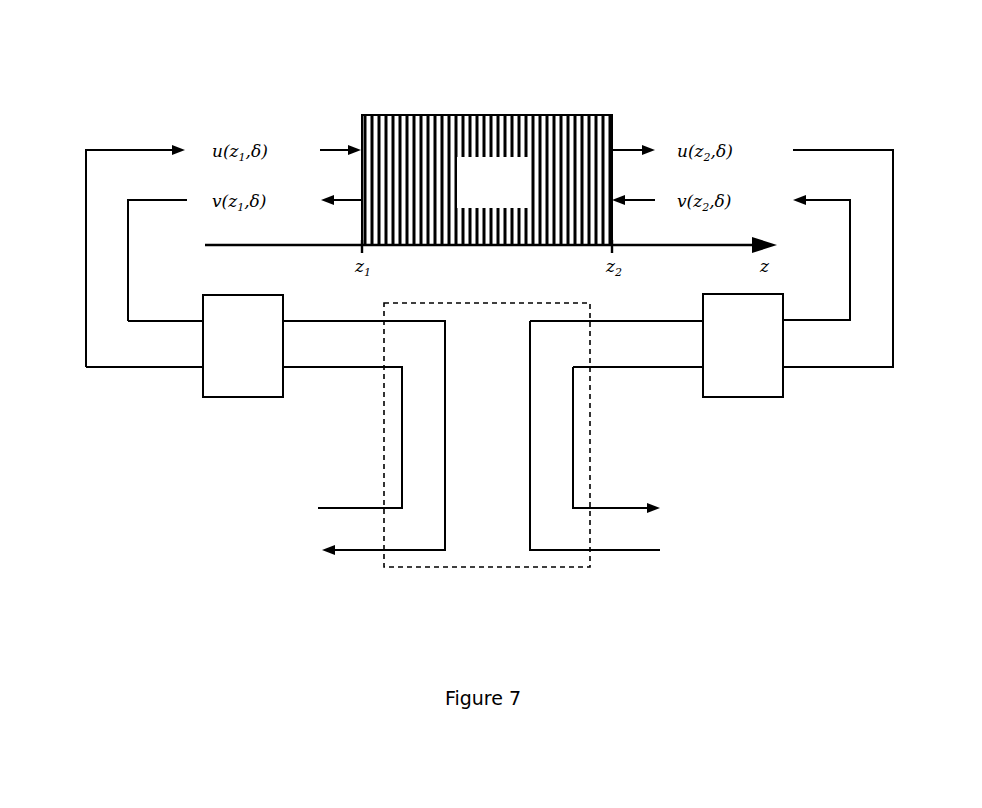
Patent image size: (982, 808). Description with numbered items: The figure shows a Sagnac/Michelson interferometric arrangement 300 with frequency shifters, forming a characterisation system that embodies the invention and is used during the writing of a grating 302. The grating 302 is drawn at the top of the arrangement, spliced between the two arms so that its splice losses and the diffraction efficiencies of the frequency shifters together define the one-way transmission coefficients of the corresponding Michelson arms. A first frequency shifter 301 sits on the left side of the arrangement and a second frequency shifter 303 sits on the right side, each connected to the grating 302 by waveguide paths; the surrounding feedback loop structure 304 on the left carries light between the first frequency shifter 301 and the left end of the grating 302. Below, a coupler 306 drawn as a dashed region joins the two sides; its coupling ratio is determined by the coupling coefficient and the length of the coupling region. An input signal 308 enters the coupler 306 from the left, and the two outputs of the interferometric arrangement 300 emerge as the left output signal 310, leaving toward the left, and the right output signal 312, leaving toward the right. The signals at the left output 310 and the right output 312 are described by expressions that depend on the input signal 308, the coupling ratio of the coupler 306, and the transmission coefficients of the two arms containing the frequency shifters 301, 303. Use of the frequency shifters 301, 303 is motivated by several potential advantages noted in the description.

The interferometric arrangement 300 is at (797, 600).
The frequency shifter 301 is at (237, 292).
The grating 302 is at (584, 106).
The frequency shifter 303 is at (745, 398).
The feedback waveguide loop 304 is at (225, 446).
The coupler kappa(z) 306 is at (548, 568).
The input signal 308 is at (385, 508).
The output signal I_left 310 is at (382, 553).
The output signal I_right 312 is at (590, 508).